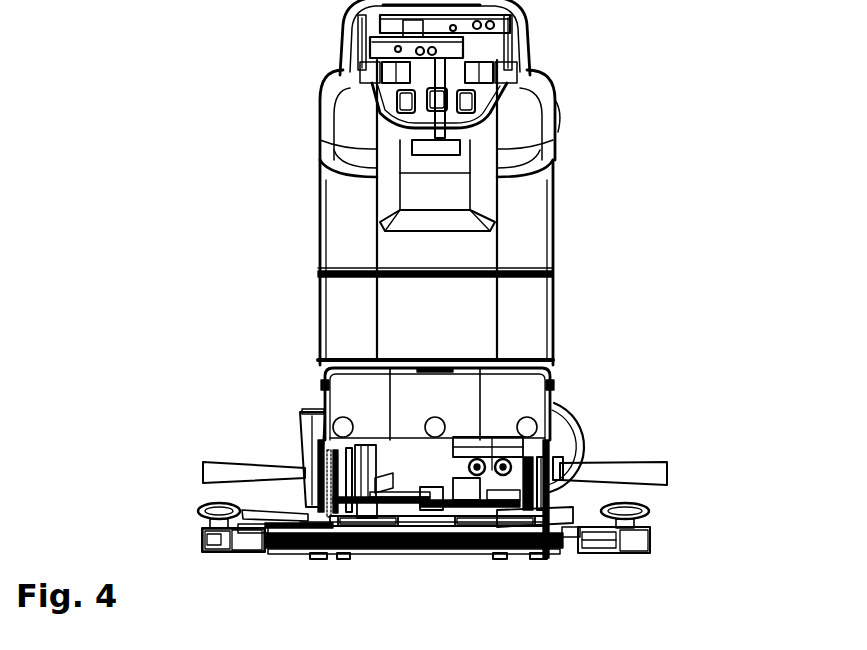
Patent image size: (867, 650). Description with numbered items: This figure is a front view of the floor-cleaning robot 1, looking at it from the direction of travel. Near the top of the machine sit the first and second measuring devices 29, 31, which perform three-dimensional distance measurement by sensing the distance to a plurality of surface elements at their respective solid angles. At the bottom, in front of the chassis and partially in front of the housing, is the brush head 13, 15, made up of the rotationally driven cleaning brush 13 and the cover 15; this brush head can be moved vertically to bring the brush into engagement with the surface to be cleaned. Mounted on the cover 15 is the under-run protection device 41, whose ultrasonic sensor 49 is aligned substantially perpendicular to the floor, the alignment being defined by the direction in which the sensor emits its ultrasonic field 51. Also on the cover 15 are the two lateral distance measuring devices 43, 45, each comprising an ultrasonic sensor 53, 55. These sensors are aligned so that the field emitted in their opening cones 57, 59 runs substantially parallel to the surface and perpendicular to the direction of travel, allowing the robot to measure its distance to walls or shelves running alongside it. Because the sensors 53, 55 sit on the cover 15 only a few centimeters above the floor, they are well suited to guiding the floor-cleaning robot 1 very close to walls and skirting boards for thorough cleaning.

The floor-cleaning robot 1 is at (424, 279).
The cleaning brush 13 is at (553, 560).
The cover 15 is at (412, 553).
The first measuring device 29 is at (512, 24).
The second measuring device 31 is at (362, 44).
The under-run protection device 41 is at (310, 557).
The lateral distance measuring device 43 is at (353, 553).
The lateral distance measuring device 45 is at (493, 558).
The ultrasonic sensor 49 is at (290, 595).
The ultrasonic field 51 is at (305, 410).
The ultrasonic sensor 53 is at (349, 575).
The ultrasonic sensor 55 is at (506, 577).
The opening cone 57 is at (255, 514).
The opening cone 59 is at (623, 457).